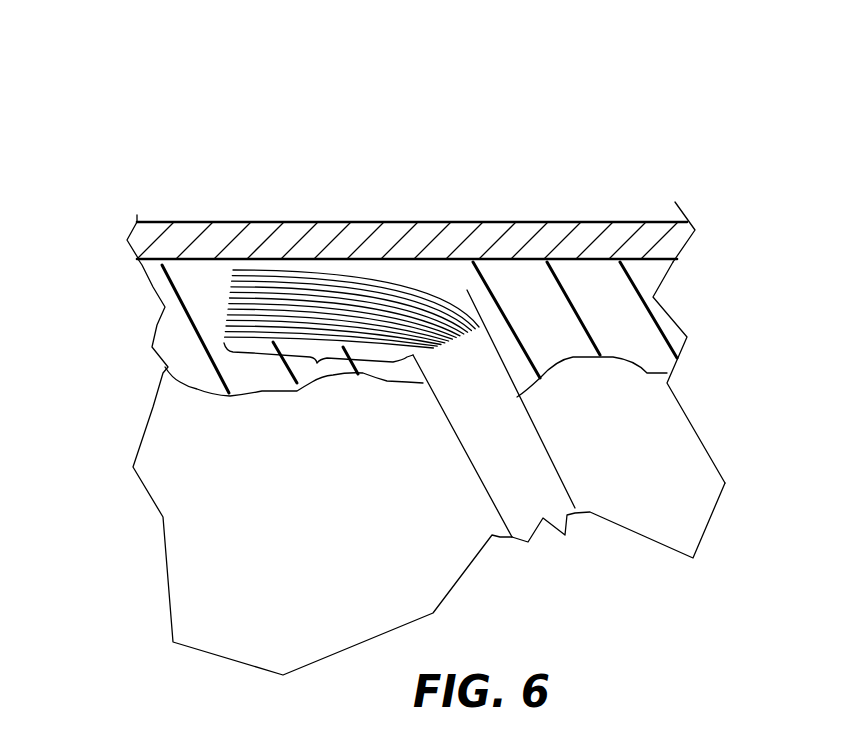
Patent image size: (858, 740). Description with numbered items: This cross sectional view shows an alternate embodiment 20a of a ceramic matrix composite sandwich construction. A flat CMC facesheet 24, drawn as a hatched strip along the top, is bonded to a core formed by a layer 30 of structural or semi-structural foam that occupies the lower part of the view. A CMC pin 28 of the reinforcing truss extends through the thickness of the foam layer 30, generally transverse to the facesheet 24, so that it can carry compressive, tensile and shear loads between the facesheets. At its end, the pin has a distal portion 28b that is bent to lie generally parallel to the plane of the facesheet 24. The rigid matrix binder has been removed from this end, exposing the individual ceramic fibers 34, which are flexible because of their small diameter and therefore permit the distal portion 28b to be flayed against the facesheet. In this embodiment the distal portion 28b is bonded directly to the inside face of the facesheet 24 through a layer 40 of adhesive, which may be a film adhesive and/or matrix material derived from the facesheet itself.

The alternate embodiment of the sandwich construction 20a is at (742, 131).
The CMC facesheet 24 is at (420, 235).
The CMC pin 28 is at (498, 463).
The distal portion 28b is at (317, 365).
The layer of structural or semi-structural foam 30 is at (198, 475).
The ceramic fibers 34 is at (285, 300).
The layer of adhesive 40 is at (548, 313).